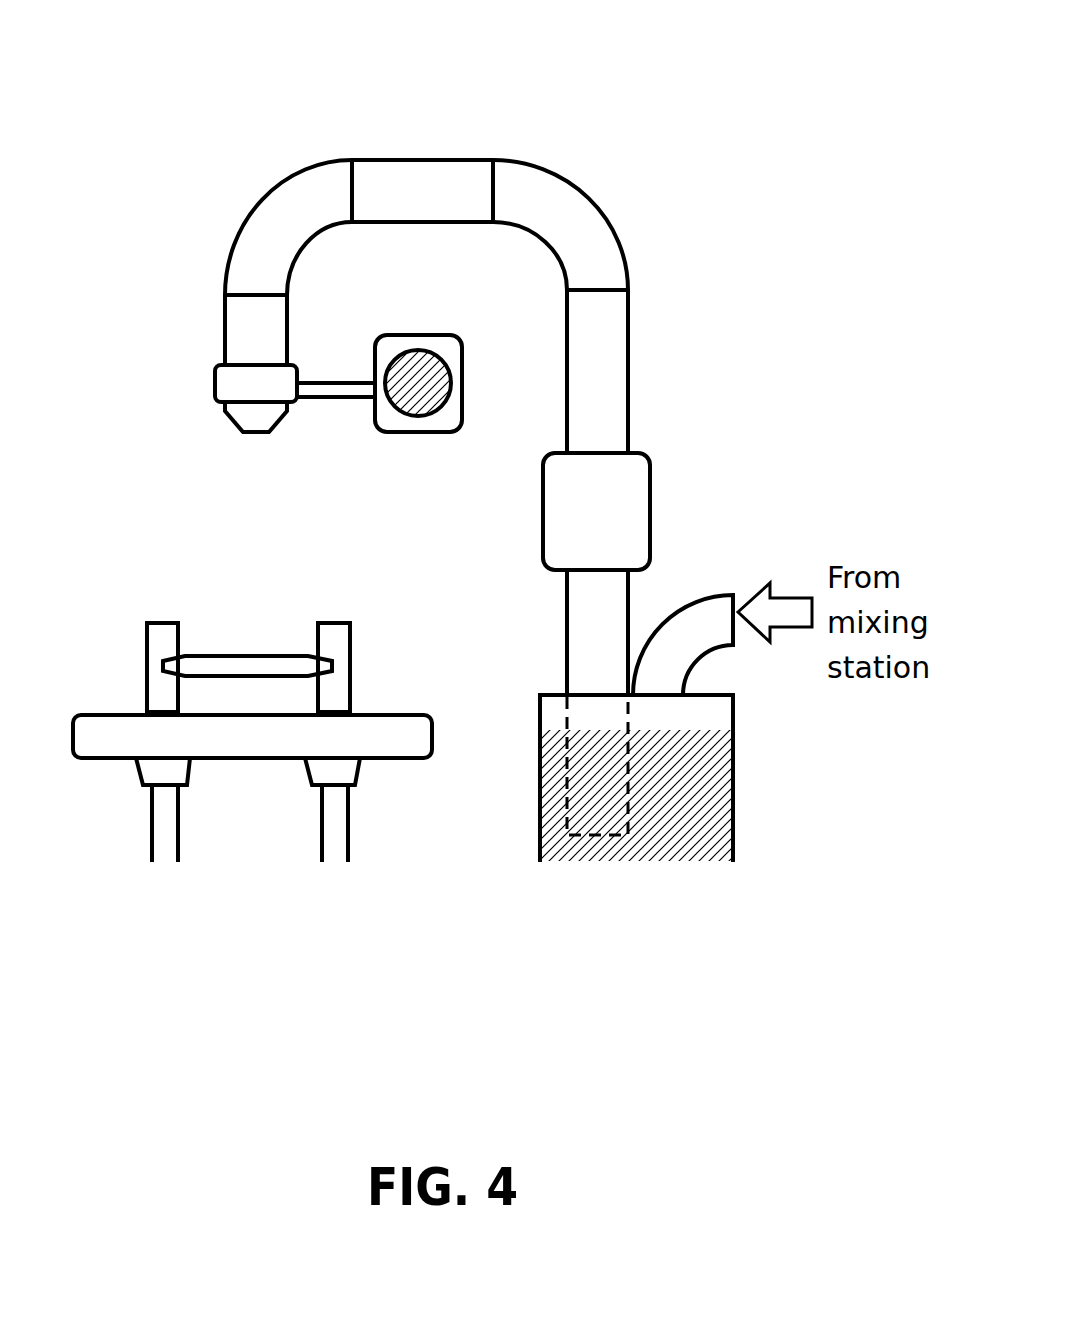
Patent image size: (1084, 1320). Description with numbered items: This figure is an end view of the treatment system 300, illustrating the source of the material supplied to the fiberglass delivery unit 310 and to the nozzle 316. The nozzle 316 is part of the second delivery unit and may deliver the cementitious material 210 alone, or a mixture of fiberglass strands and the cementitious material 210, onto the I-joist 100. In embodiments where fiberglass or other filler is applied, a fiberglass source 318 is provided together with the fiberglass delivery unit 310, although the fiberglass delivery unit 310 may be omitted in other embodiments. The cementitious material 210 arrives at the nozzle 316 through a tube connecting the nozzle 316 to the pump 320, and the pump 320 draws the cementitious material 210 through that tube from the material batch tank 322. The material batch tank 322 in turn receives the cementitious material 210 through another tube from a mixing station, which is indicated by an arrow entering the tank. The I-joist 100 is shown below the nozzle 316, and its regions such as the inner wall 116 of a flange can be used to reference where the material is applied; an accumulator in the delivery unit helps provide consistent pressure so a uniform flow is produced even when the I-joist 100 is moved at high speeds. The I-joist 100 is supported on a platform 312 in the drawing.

The treatment system 300 is at (190, 128).
The fiberglass delivery unit 310 is at (245, 383).
The nozzle 316 is at (255, 420).
The fiberglass source 318 is at (418, 335).
The pump 320 is at (610, 515).
The material batch tank 322 is at (539, 862).
The cementitious material 210 is at (705, 823).
The I-joist 100 is at (282, 606).
The inner wall 116 is at (318, 638).
The platform 312 is at (252, 788).